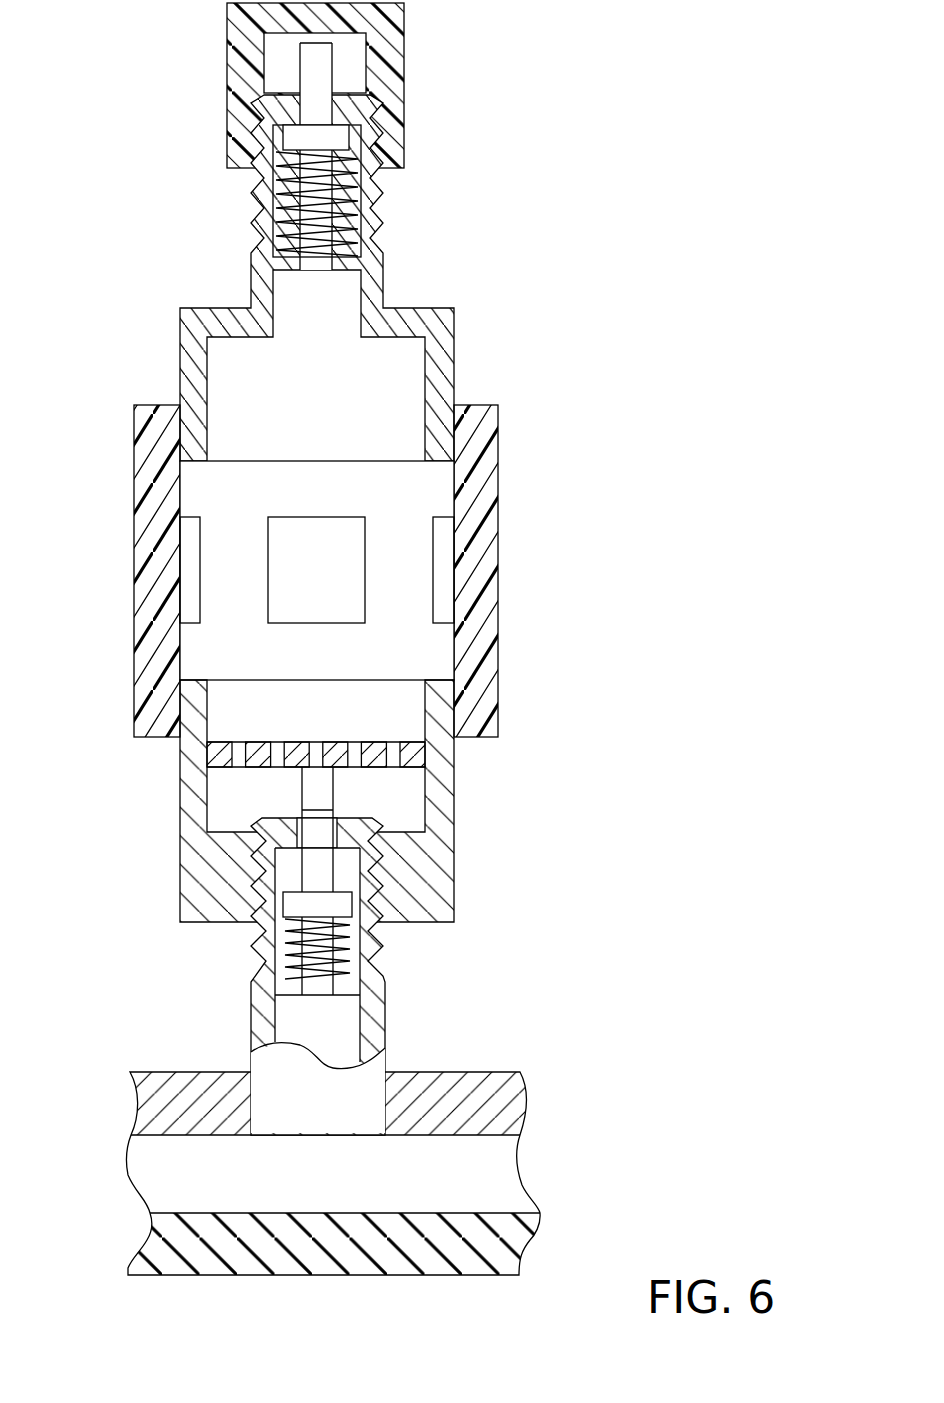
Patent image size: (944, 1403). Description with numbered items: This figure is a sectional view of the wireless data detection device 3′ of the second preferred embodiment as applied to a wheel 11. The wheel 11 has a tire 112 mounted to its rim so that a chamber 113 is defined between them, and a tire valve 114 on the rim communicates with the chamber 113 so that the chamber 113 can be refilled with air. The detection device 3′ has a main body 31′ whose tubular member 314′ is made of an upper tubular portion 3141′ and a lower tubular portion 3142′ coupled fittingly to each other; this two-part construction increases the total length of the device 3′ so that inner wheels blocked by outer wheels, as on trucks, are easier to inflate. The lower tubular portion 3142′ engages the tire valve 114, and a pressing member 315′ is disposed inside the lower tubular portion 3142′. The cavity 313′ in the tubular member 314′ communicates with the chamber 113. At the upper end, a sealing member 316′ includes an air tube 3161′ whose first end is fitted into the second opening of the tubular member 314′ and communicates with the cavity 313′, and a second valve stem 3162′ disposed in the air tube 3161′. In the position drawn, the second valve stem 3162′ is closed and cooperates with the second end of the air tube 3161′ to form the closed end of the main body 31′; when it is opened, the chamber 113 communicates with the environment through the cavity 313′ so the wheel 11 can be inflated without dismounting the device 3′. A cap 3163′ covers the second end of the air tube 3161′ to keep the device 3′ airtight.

The wireless data detection device 3′ is at (401, 462).
The main body 31′ is at (484, 455).
The cavity 313′ is at (441, 660).
The tubular member 314′ is at (397, 691).
The upper tubular portion 3141′ is at (492, 610).
The lower tubular portion 3142′ is at (455, 815).
The pressing member 315′ is at (410, 767).
The sealing member 316′ is at (385, 247).
The air tube 3161′ is at (455, 363).
The second valve stem 3162′ is at (340, 133).
The cap 3163′ is at (404, 62).
The wheel 11 is at (337, 1021).
The tire 112 is at (520, 1240).
The chamber 113 is at (492, 1163).
The tire valve 114 is at (385, 1003).